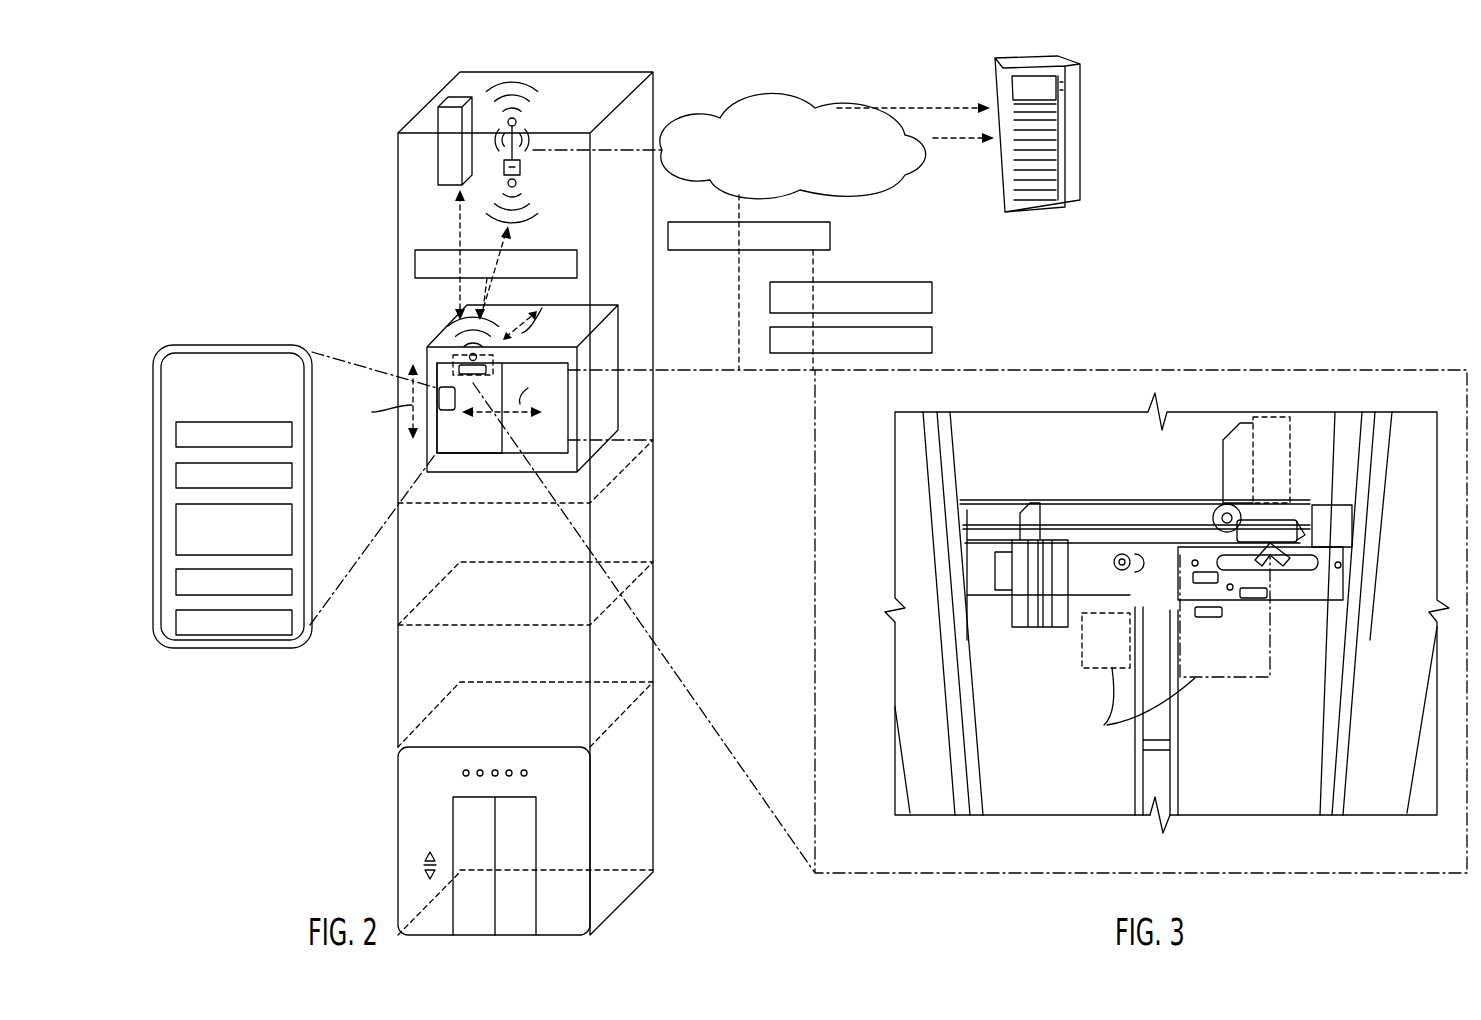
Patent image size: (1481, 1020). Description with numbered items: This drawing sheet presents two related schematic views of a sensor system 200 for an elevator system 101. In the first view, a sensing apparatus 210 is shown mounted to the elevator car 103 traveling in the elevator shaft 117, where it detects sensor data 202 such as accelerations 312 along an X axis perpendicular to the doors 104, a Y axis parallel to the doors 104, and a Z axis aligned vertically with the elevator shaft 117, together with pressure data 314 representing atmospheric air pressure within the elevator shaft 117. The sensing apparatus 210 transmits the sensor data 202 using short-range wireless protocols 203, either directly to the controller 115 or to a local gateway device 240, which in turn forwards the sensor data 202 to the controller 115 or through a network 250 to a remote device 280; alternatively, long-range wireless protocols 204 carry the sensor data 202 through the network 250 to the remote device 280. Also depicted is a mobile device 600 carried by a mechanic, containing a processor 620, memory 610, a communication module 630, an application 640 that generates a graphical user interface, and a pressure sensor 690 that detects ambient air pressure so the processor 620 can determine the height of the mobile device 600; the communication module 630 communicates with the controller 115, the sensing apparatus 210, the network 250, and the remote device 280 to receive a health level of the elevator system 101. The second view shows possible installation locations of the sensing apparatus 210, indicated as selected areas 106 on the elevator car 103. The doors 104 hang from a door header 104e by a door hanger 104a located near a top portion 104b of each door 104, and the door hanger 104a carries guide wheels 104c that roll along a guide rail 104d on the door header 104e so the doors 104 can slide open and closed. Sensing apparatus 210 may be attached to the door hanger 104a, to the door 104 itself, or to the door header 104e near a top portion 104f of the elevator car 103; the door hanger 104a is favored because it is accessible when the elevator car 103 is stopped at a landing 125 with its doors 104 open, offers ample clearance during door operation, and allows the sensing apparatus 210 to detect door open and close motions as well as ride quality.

In FIG. 2, the sensor system 200 is at (362, 143).
In FIG. 2, the long-range wireless protocols 204 is at (652, 350).
In FIG. 2, the controller 115 is at (446, 118).
In FIG. 2, the elevator shaft 117 is at (445, 229).
In FIG. 2, the local gateway device 240 is at (521, 167).
In FIG. 2, the sensor data 202 is at (415, 262).
In FIG. 2, the short-range wireless protocols 203 is at (485, 298).
In FIG. 2, the doors 104 is at (455, 440).
In FIG. 3, the doors 104 is at (1075, 762).
In FIG. 2, the elevator car 103 is at (433, 437).
In FIG. 2, the sensing apparatus 210 is at (425, 357).
In FIG. 3, the sensing apparatus 210 is at (1210, 553).
In FIG. 2, the door header 104e is at (493, 370).
In FIG. 3, the door header 104e is at (1118, 550).
In FIG. 2, the landing 125 is at (452, 630).
In FIG. 2, the mobile device 600 is at (197, 345).
In FIG. 2, the memory 610 is at (176, 432).
In FIG. 2, the processor 620 is at (176, 472).
In FIG. 2, the communication module 630 is at (176, 530).
In FIG. 2, the application 640 is at (176, 578).
In FIG. 2, the pressure sensor 690 is at (176, 618).
In FIG. 2, the elevator system 101 is at (338, 605).
In FIG. 2, the network 250 is at (860, 182).
In FIG. 2, the remote device 280 is at (1073, 155).
In FIG. 2, the accelerations 312 is at (932, 300).
In FIG. 2, the pressure data 314 is at (932, 343).
In FIG. 3, the top portion 104f is at (1095, 527).
In FIG. 3, the top portion 104b is at (1270, 617).
In FIG. 3, the door hanger 104a is at (1237, 603).
In FIG. 3, the guide wheels 104c is at (1106, 640).
In FIG. 3, the guide rail 104d is at (1198, 618).
In FIG. 3, the selected areas 106 is at (1132, 706).